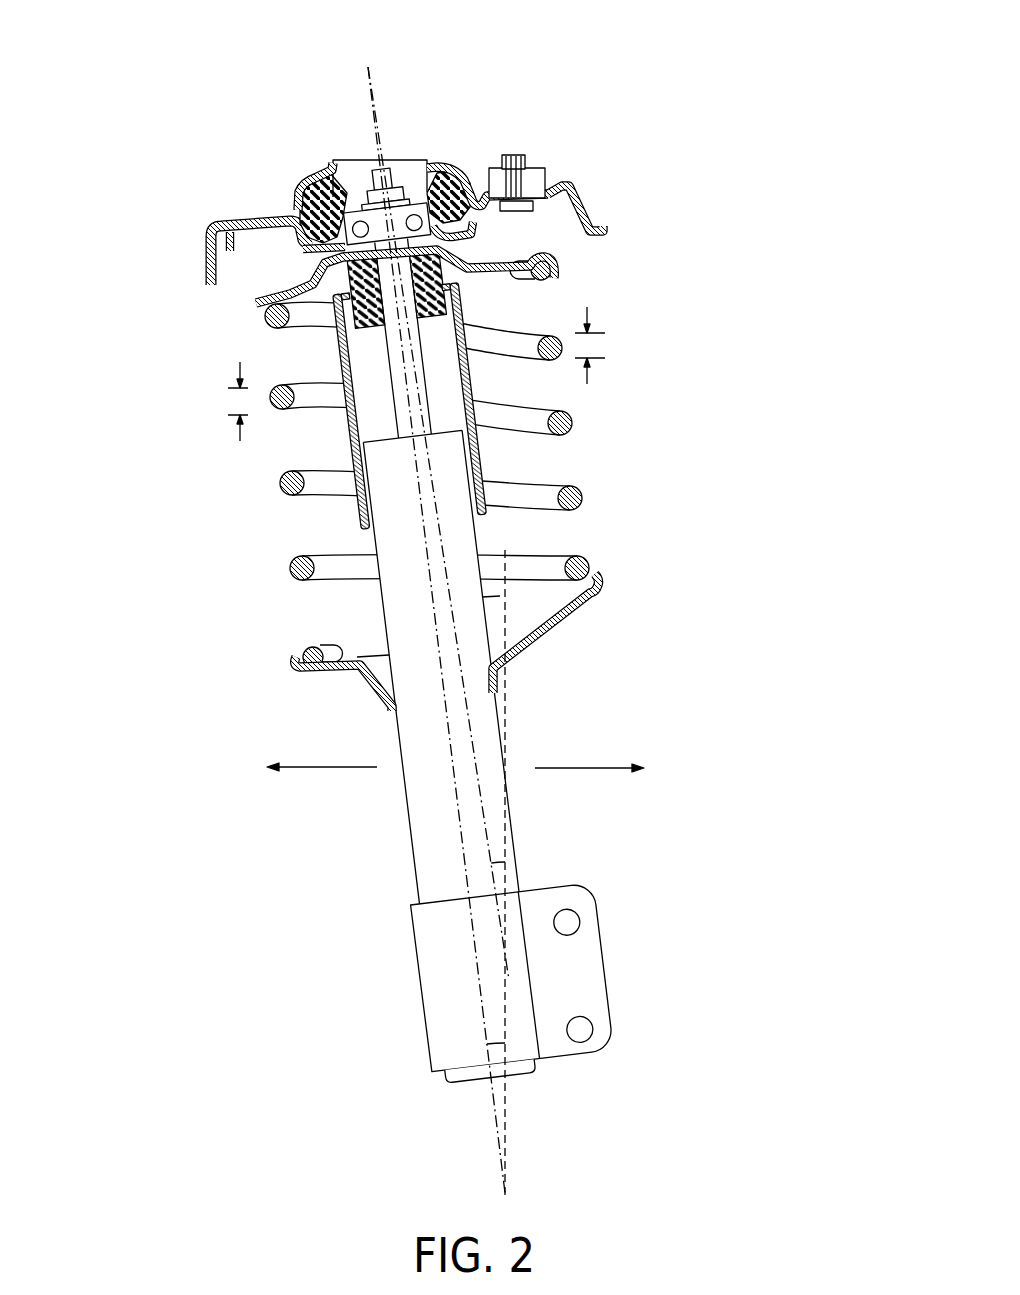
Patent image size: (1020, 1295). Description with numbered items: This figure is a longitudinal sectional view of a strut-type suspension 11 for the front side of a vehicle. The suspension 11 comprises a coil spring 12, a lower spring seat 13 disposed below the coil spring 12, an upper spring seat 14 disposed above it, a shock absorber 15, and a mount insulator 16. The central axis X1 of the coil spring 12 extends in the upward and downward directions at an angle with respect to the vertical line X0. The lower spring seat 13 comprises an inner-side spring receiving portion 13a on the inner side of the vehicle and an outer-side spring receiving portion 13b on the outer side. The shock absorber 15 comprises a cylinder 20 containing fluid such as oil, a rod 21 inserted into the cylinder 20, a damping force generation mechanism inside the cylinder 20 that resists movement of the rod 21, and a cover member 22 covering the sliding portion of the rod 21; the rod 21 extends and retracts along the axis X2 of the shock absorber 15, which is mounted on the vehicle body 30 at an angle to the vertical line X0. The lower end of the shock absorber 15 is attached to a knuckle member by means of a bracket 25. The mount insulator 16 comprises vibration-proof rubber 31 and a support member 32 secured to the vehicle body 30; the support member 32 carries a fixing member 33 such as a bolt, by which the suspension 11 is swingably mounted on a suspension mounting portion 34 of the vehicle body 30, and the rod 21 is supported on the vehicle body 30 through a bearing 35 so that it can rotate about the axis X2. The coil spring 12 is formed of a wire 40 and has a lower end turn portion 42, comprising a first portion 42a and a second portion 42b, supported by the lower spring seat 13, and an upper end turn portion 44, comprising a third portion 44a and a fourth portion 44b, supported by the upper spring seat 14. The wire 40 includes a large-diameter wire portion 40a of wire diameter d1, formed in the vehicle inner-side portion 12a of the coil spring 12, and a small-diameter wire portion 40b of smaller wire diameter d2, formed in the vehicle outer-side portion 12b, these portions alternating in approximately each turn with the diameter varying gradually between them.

The strut-type suspension 11 is at (597, 70).
The coil spring 12 is at (588, 444).
The vehicle inner-side portion 12a is at (268, 469).
The vehicle outer-side portion 12b is at (580, 404).
The lower spring seat 13 is at (547, 630).
The inner-side spring receiving portion 13a is at (328, 673).
The outer-side spring receiving portion 13b is at (592, 597).
The upper spring seat 14 is at (490, 262).
The shock absorber 15 is at (403, 792).
The mount insulator 16 is at (330, 178).
The cylinder 20 is at (395, 612).
The rod 21 is at (399, 302).
The cover member 22 is at (475, 378).
The bracket 25 is at (592, 974).
The vehicle body 30 is at (205, 247).
The vibration-proof rubber 31 is at (450, 170).
The support member 32 is at (466, 176).
The fixing member 33 is at (512, 157).
The suspension mounting portion 34 is at (560, 182).
The bearing 35 is at (399, 205).
The wire 40 is at (490, 332).
The large-diameter wire portion 40a is at (278, 387).
The small-diameter wire portion 40b is at (547, 336).
The lower end turn portion 42 is at (302, 668).
The first portion 42a is at (318, 648).
The second portion 42b is at (592, 558).
The upper end turn portion 44 is at (557, 283).
The third portion 44a is at (550, 261).
The fourth portion 44b is at (264, 316).
The vertical line X0 is at (510, 717).
The central axis of coil spring X1 is at (446, 542).
The axis of shock absorber X2 is at (460, 832).
The wire diameter d1 is at (236, 401).
The wire diameter d2 is at (604, 346).